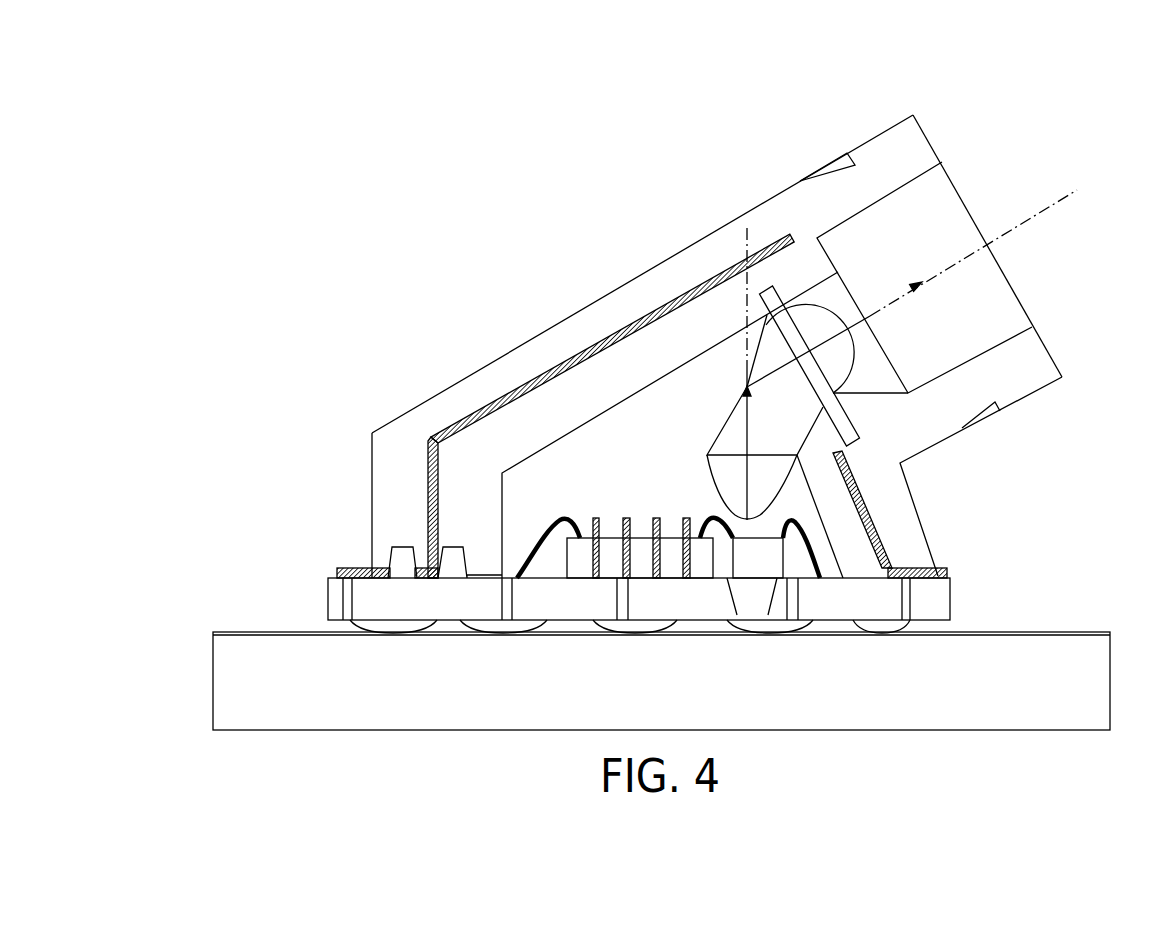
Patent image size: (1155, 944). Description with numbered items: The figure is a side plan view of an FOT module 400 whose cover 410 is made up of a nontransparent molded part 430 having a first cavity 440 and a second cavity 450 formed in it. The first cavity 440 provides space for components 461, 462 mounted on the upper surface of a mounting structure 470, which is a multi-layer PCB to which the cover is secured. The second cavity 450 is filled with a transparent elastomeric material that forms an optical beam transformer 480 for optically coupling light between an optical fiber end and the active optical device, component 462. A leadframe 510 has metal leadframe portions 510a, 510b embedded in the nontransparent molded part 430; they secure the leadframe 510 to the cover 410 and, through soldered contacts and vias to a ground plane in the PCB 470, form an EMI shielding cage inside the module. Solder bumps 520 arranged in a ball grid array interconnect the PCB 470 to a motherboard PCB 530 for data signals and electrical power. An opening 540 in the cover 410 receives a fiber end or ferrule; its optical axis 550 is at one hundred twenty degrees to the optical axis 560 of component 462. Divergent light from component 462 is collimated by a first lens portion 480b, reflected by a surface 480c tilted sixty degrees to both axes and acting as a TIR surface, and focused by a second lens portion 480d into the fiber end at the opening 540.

The FOT module 400 is at (284, 134).
The cover 410 is at (505, 275).
The nontransparent molded part 430 is at (627, 286).
The first cavity 440 is at (588, 452).
The second cavity 450 is at (724, 430).
The component 461 is at (693, 574).
The component 462 is at (753, 574).
The mounting structure 470 is at (946, 602).
The optical beam transformer 480 is at (783, 402).
The first lens portion 480b is at (738, 498).
The surface 480c is at (757, 352).
The second lens portion 480d is at (852, 345).
The leadframe 510 is at (360, 570).
The metal leadframe portion 510a is at (520, 385).
The metal leadframe portion 510b is at (866, 507).
The solder bumps 520 is at (515, 627).
The motherboard PCB 530 is at (1012, 638).
The opening 540 is at (950, 222).
The optical axis 550 is at (880, 303).
The optical axis 560 is at (746, 418).